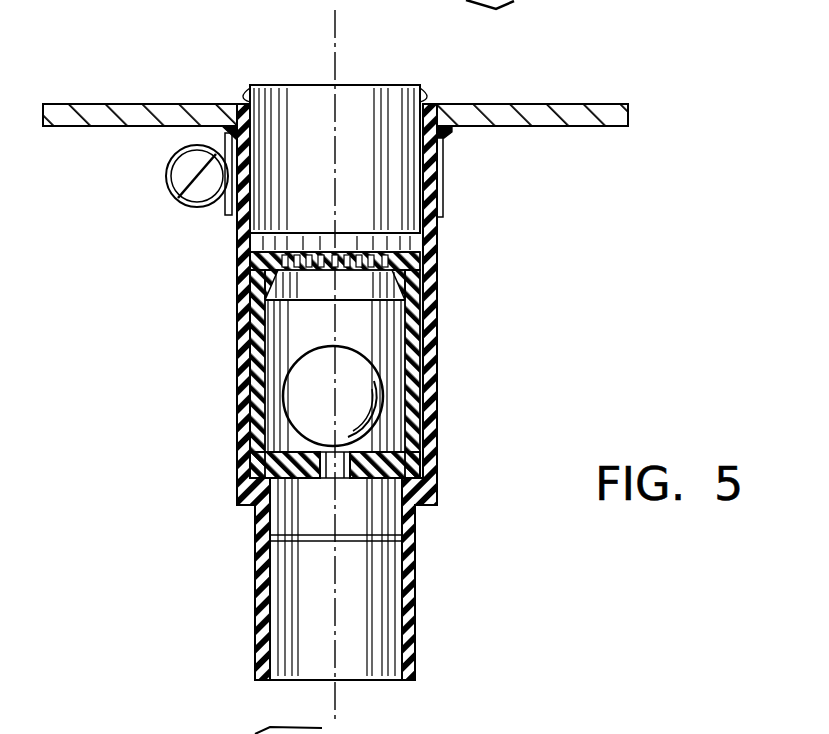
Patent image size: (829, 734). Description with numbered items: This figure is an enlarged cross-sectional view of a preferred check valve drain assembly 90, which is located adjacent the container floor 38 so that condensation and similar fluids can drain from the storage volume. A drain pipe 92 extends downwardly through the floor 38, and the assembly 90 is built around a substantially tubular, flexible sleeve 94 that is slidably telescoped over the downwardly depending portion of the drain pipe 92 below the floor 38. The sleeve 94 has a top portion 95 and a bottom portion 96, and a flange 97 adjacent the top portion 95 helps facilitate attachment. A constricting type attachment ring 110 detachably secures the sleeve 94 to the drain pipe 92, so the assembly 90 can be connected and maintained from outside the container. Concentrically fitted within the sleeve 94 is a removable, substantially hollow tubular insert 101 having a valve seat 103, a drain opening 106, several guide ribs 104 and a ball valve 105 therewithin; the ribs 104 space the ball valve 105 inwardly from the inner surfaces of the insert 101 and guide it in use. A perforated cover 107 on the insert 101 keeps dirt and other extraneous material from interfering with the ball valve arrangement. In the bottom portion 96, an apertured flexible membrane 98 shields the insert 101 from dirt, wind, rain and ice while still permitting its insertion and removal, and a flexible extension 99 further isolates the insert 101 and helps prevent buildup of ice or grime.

The floor 38 is at (158, 112).
The check valve drain assembly 90 is at (524, 274).
The drain pipe 92 is at (387, 112).
The flexible sleeve 94 is at (426, 340).
The top portion 95 is at (458, 139).
The bottom portion 96 is at (420, 521).
The flange 97 is at (443, 135).
The apertured flexible membrane 98 is at (297, 543).
The flexible extension 99 is at (412, 622).
The tubular insert 101 is at (428, 408).
The valve seat 103 is at (262, 416).
The guide ribs 104 is at (432, 441).
The ball valve 105 is at (293, 367).
The drain opening 106 is at (330, 487).
The perforated cover 107 is at (325, 248).
The attachment ring 110 is at (167, 182).